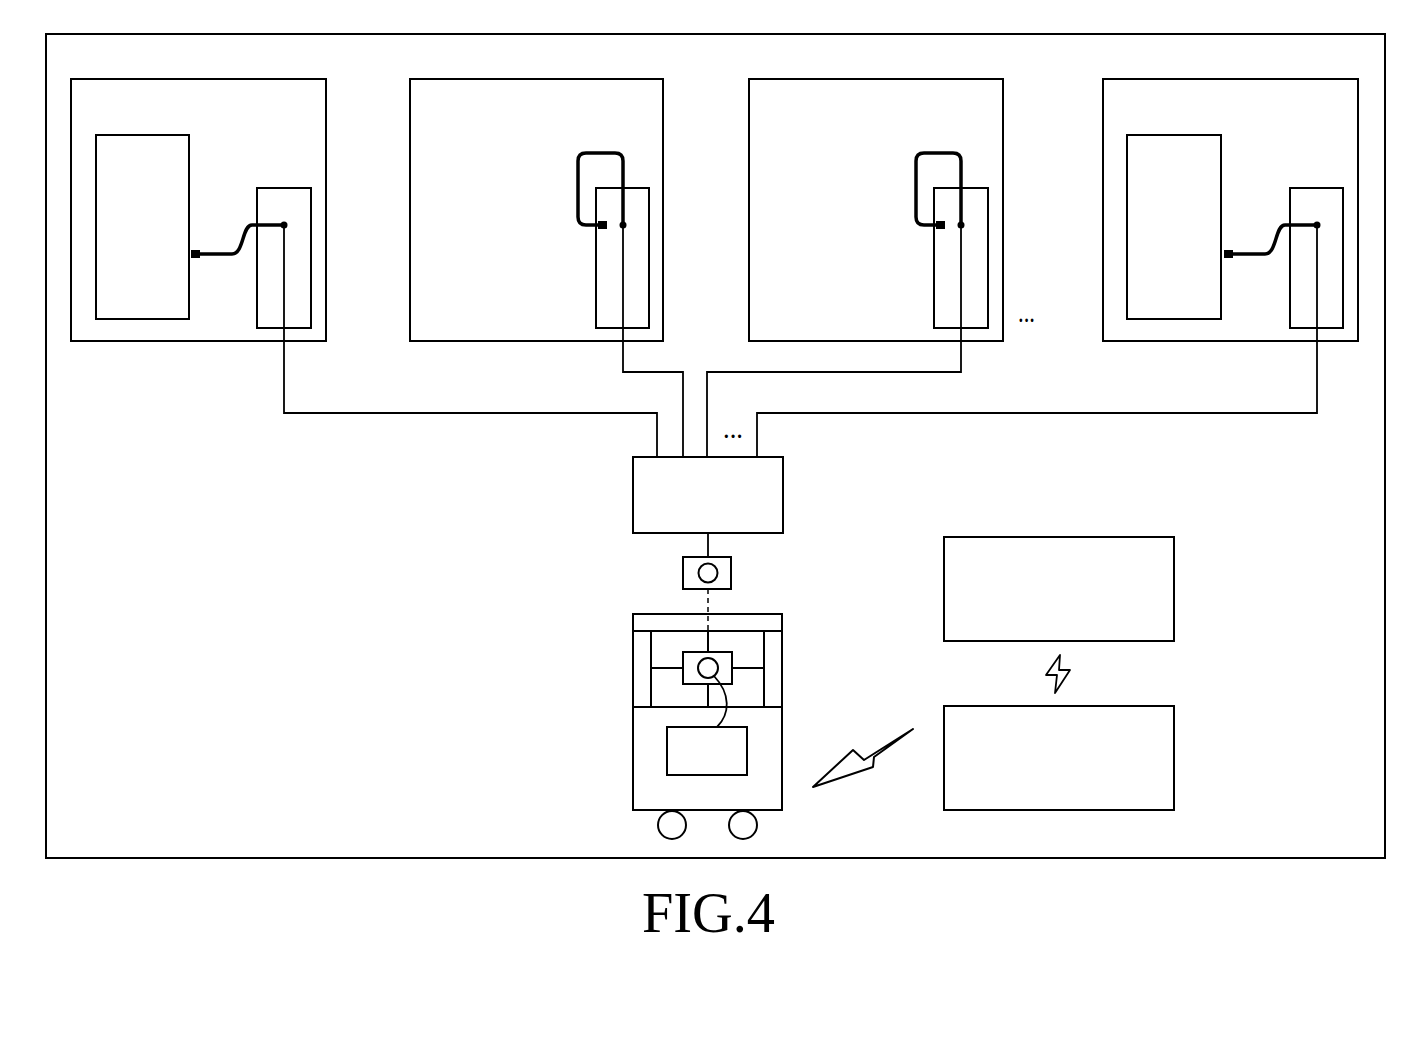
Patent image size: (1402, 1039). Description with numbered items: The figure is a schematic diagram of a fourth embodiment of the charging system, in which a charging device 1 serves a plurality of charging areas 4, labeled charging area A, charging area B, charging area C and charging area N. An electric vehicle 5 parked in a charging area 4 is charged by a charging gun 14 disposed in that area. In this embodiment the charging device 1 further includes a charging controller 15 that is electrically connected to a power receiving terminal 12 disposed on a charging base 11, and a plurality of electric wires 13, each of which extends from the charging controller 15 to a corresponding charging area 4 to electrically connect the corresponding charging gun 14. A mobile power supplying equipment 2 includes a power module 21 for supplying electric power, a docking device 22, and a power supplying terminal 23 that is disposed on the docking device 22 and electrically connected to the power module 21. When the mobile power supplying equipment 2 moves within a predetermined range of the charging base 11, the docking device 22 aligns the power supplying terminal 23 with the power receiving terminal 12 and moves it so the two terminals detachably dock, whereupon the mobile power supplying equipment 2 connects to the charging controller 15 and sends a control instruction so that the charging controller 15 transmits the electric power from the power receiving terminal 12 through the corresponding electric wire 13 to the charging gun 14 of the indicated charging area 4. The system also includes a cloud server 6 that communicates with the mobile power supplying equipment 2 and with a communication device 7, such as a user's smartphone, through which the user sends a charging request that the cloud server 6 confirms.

The charging device 1 is at (726, 492).
The mobile power supplying equipment 2 is at (734, 714).
The charging area 4 is at (70, 118).
The electric vehicle 5 is at (190, 164).
The cloud server 6 is at (1162, 705).
The communication device 7 is at (1162, 536).
The charging base 11 is at (713, 563).
The power receiving terminal 12 is at (692, 573).
The electric wire 13 is at (373, 414).
The charging gun 14 is at (197, 254).
The charging controller 15 is at (633, 495).
The power module 21 is at (667, 752).
The docking device 22 is at (732, 658).
The power supplying terminal 23 is at (699, 672).